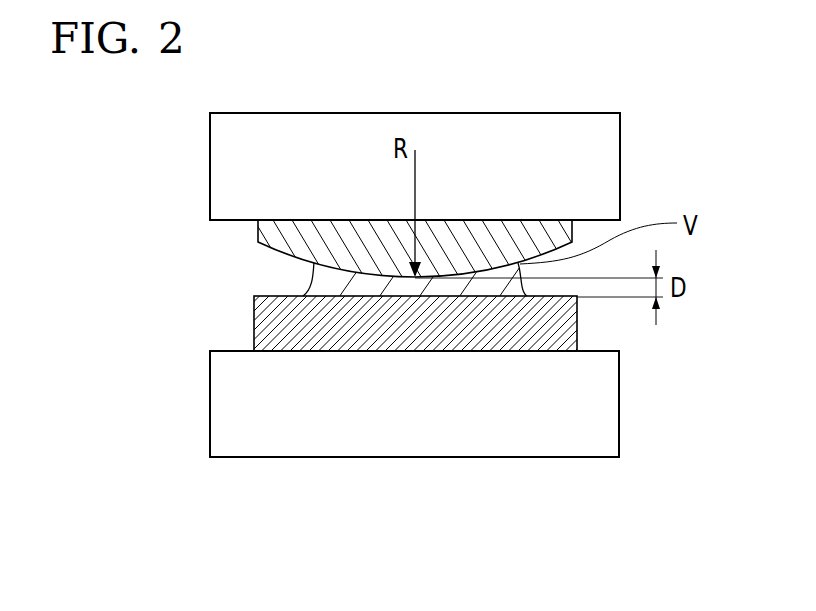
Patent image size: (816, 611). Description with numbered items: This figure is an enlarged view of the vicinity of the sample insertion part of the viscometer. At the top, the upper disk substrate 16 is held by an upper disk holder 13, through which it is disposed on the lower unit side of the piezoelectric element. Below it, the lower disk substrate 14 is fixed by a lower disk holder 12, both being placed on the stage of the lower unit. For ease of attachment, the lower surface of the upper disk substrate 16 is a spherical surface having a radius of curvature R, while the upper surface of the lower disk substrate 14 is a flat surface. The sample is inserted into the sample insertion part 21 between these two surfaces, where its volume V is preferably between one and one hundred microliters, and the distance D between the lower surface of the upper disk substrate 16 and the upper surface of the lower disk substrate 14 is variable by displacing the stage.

The lower disk holder 12 is at (242, 402).
The upper disk holder 13 is at (227, 166).
The lower disk substrate 14 is at (280, 322).
The upper disk substrate 16 is at (283, 242).
The sample insertion part 21 is at (415, 287).